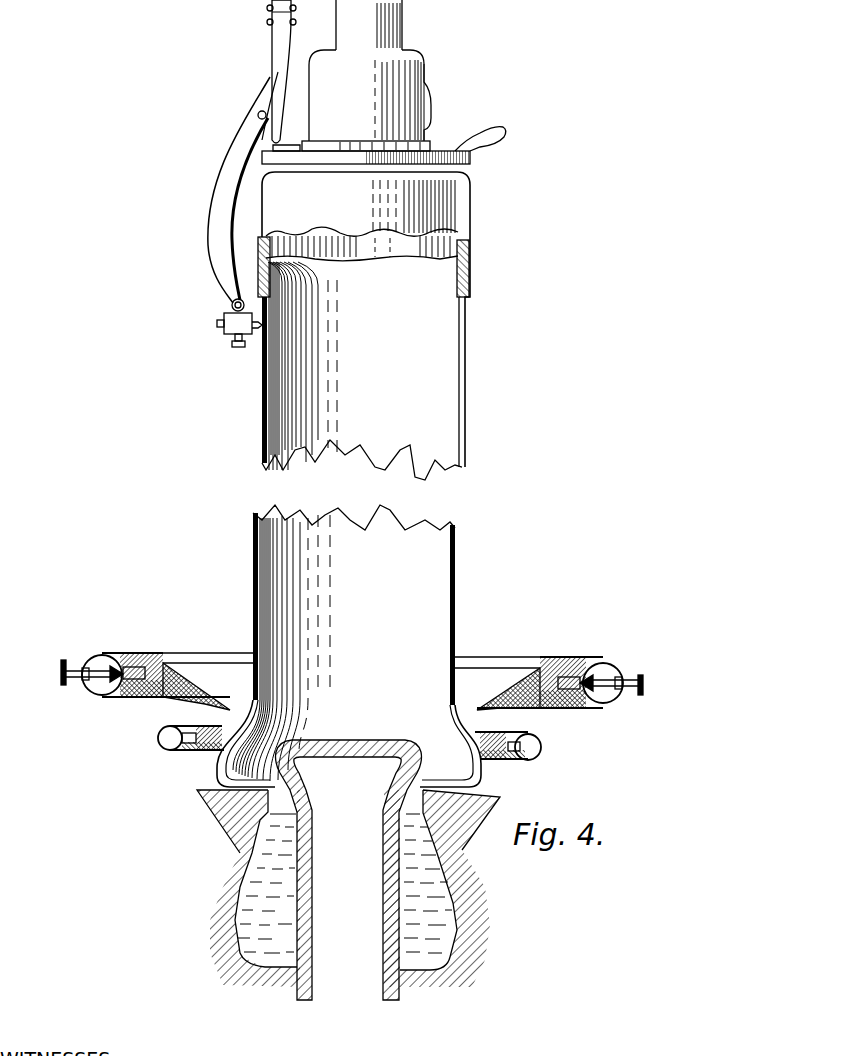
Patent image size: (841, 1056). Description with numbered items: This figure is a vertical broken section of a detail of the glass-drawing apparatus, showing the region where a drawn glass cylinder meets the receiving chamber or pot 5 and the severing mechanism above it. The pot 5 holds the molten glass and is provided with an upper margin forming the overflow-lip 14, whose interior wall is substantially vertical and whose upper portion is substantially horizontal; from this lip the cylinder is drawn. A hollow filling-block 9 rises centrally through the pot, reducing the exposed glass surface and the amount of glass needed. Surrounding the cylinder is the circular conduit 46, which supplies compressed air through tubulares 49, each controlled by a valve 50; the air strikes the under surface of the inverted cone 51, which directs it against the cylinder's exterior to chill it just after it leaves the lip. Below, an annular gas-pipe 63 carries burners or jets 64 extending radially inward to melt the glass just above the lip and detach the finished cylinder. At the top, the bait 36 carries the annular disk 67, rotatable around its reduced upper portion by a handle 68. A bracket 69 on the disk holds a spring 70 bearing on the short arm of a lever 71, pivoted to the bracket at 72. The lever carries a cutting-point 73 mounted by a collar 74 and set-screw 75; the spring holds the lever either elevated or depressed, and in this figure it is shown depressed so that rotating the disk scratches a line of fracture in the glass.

The receiving chamber or pot 5 is at (345, 883).
The hollow filling-block 9 is at (349, 870).
The overflow-lip 14 is at (250, 792).
The bait 36 is at (418, 82).
The circular conduit 46 is at (160, 660).
The tubulares 49 is at (140, 668).
The valve 50 is at (80, 680).
The inverted cone 51 is at (351, 686).
The annular gas-pipe 63 is at (158, 746).
The burners or jets 64 is at (183, 750).
The annular disk 67 is at (472, 160).
The handle 68 is at (502, 131).
The bracket 69 is at (268, 79).
The spring 70 is at (272, 42).
The lever 71 is at (212, 205).
The pivot 72 is at (258, 117).
The cutting-point 73 is at (258, 328).
The collar 74 is at (225, 320).
The set-screw 75 is at (238, 346).